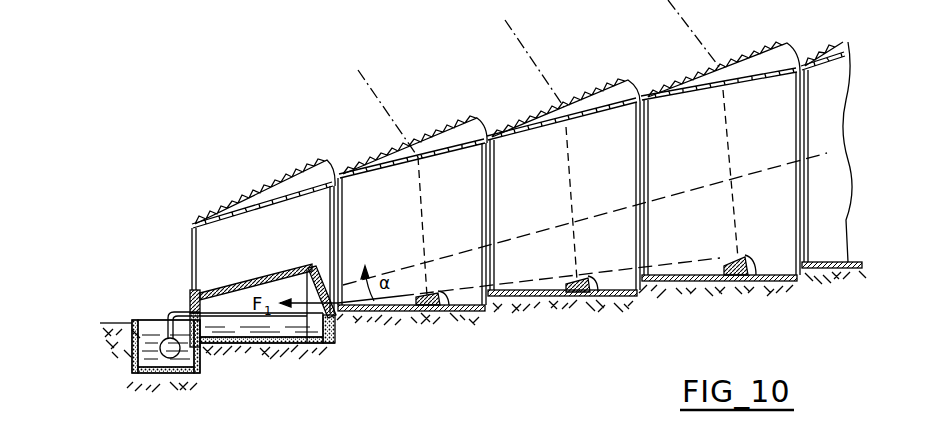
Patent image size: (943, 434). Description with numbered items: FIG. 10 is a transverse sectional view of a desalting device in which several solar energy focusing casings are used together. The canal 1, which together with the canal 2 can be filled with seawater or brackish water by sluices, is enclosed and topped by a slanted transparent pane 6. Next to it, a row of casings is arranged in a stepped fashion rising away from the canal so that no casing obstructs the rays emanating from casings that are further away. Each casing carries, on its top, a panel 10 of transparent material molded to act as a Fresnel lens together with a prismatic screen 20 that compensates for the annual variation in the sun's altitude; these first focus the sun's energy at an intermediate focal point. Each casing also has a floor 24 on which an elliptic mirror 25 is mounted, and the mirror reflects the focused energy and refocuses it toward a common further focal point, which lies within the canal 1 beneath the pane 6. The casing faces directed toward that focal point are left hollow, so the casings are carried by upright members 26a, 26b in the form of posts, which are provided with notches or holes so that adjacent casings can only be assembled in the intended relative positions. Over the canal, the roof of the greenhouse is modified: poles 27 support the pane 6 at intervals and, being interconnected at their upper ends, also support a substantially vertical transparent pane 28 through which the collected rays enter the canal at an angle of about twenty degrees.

The canal 1 is at (283, 348).
The canal 2 is at (150, 360).
The transparent pane 6 is at (242, 286).
The panel 10 is at (280, 204).
The screen 20 is at (256, 188).
The floor 24 is at (385, 312).
The elliptic mirror 25 is at (446, 306).
The upright member 26a is at (338, 233).
The upright member 26b is at (482, 195).
The pole 27 is at (317, 348).
The substantially vertical transparent pane 28 is at (326, 267).